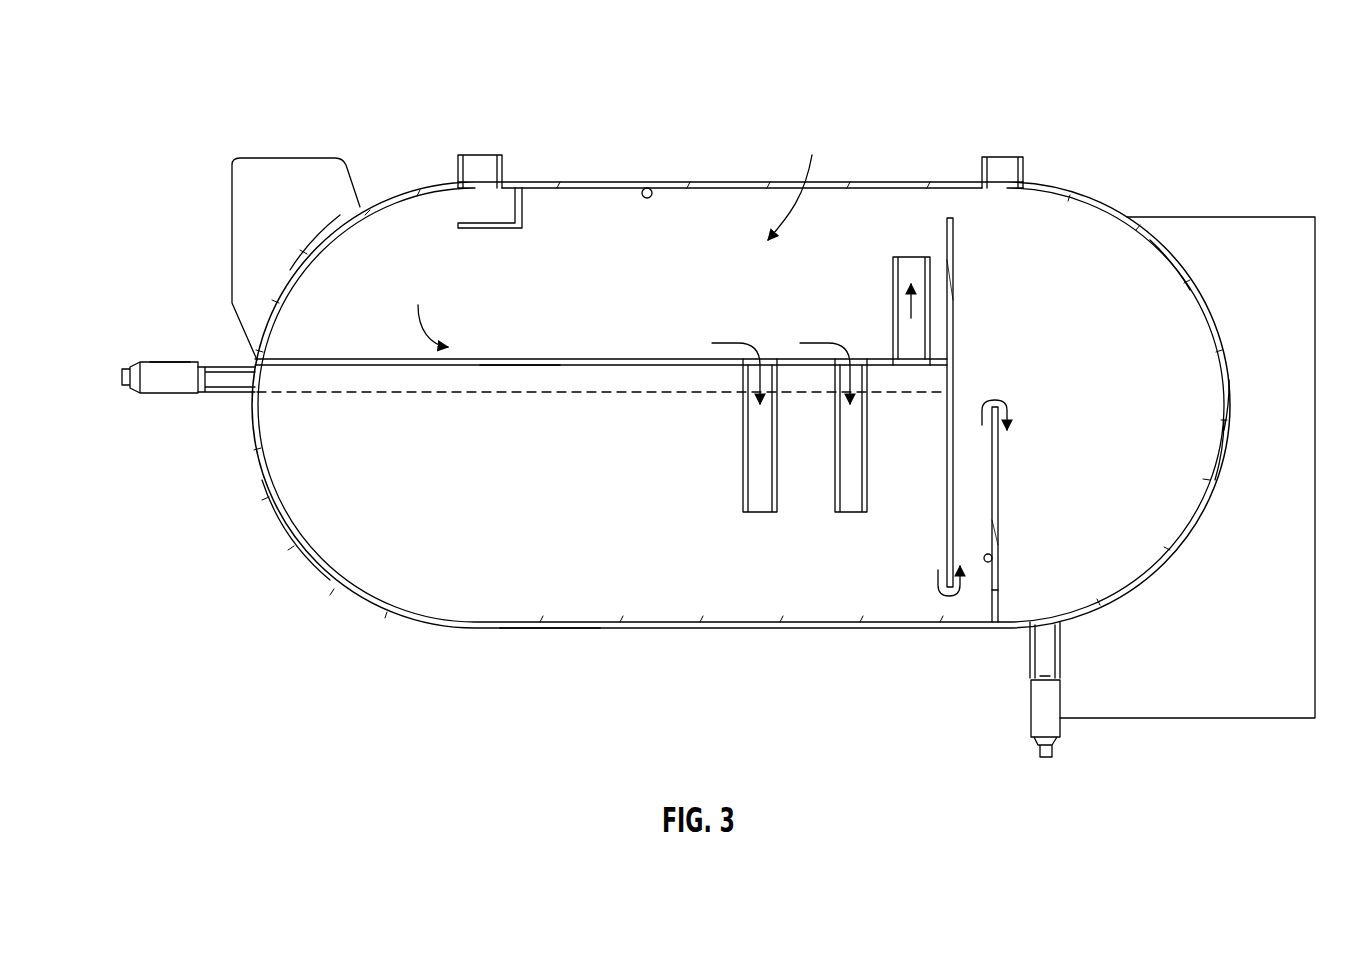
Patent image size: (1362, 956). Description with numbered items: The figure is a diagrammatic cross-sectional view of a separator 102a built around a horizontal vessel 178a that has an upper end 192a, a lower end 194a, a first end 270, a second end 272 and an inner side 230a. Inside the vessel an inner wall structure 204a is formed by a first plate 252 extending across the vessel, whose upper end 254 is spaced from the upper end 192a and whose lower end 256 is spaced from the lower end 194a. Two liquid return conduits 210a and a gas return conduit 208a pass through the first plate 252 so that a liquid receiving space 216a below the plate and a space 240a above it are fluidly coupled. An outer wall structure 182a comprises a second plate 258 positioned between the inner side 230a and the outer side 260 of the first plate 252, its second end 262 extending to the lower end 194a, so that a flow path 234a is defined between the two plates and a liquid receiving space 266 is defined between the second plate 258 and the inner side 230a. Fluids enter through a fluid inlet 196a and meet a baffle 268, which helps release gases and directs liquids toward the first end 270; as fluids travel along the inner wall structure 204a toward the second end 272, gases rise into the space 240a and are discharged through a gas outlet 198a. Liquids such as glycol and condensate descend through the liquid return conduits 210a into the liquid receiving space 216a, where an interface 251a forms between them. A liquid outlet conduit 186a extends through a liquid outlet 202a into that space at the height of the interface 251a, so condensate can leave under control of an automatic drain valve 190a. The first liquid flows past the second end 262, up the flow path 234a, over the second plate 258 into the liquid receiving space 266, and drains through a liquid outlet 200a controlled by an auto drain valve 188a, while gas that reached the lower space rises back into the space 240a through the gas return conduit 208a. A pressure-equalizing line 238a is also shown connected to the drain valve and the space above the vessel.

The separator 102a is at (237, 107).
The horizontal vessel 178a is at (855, 182).
The outer wall structure 182a is at (1000, 462).
The liquid outlet conduit 186a is at (245, 393).
The auto drain valve 188a is at (1062, 735).
The automatic drain valve 190a is at (162, 393).
The upper end 192a is at (647, 188).
The lower end 194a is at (540, 628).
The fluid inlet 196a is at (477, 155).
The gas outlet 198a is at (1003, 157).
The liquid outlet 200a is at (1062, 635).
The liquid outlet 202a is at (250, 366).
The inner wall structure 204a is at (553, 355).
The gas return conduit 208a is at (893, 304).
The liquid return conduits 210a is at (742, 455).
The liquid receiving space 216a is at (420, 490).
The inner side 230a is at (1222, 447).
The flow path 234a is at (993, 560).
The mounting bracket 238a is at (287, 158).
The space 240a is at (801, 183).
The interface 251a is at (375, 392).
The first plate 252 is at (470, 359).
The upper end 254 is at (953, 222).
The lower end 256 is at (508, 367).
The second plate 258 is at (998, 500).
The outer side 260 is at (953, 285).
The second end 262 is at (998, 608).
The liquid receiving space 266 is at (1135, 385).
The baffle 268 is at (482, 232).
The first end 270 is at (313, 243).
The second end 272 is at (1182, 262).